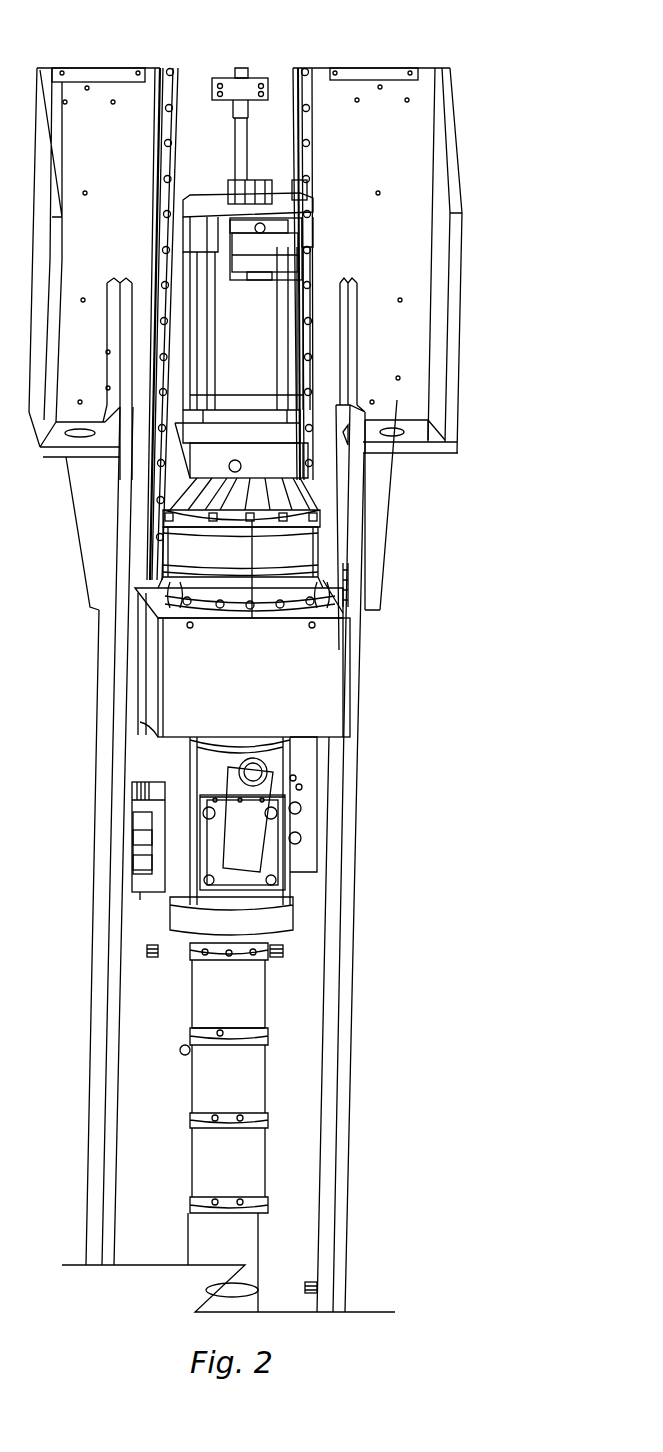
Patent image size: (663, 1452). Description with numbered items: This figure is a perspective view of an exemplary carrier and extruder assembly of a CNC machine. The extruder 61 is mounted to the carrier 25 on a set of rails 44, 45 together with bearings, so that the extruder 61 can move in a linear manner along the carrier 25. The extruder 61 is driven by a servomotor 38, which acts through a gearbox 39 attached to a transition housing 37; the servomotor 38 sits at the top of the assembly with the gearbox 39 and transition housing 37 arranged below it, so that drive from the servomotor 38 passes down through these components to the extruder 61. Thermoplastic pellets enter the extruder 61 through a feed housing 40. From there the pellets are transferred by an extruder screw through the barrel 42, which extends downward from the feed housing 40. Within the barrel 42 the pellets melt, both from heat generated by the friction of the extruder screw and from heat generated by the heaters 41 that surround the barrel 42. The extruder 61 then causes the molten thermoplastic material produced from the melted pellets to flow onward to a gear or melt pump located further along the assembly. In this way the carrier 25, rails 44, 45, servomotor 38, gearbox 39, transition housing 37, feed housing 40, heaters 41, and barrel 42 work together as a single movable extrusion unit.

The carrier 25 is at (485, 230).
The rail 44 is at (172, 68).
The rail 45 is at (305, 68).
The servomotor 38 is at (263, 295).
The gearbox 39 is at (287, 462).
The transition housing 37 is at (292, 673).
The feed housing 40 is at (277, 780).
The extruder 61 is at (297, 860).
The heaters 41 is at (248, 998).
The barrel 42 is at (260, 1115).